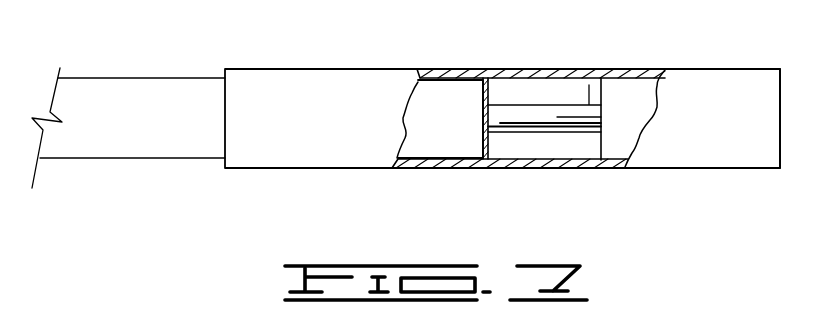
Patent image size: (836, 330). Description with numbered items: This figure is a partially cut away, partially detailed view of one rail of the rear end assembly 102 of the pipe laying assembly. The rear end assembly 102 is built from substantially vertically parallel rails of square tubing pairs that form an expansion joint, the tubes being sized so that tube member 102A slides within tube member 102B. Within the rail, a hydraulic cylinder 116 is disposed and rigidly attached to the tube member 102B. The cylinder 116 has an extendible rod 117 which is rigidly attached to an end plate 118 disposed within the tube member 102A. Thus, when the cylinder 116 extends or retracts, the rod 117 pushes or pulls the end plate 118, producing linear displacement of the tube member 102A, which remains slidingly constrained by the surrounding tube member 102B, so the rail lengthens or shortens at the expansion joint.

The rear end assembly 102 is at (309, 156).
The tube member 102A is at (98, 148).
The tube member 102B is at (680, 155).
The hydraulic cylinder 116 is at (625, 92).
The extendible rod 117 is at (533, 125).
The end plate 118 is at (488, 93).